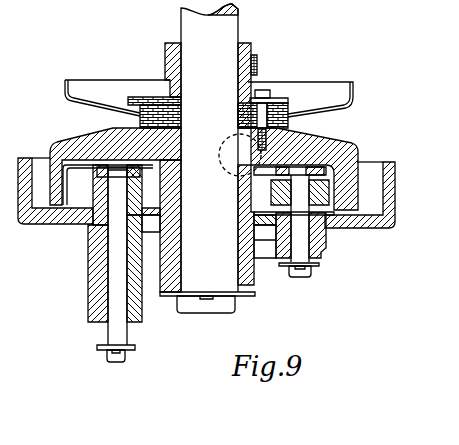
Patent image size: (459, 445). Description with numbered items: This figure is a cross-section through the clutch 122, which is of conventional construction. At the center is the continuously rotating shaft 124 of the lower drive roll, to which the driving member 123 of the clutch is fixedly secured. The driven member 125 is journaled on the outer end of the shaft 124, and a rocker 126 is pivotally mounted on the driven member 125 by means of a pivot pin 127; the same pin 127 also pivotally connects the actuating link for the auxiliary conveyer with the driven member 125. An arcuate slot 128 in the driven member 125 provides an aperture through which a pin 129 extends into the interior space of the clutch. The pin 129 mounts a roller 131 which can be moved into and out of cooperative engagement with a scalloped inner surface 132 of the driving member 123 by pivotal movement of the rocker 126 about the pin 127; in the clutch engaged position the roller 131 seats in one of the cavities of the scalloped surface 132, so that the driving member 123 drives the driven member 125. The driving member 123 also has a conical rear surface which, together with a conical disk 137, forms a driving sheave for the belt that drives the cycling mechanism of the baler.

The clutch 122 is at (41, 228).
The driving member 123 is at (70, 143).
The shaft 124 is at (238, 25).
The driven member 125 is at (90, 300).
The rocker 126 is at (93, 258).
The pivot pin 127 is at (108, 333).
The arcuate slot 128 is at (326, 230).
The pin 129 is at (298, 278).
The roller 131 is at (331, 195).
The scalloped inner surface 132 is at (69, 187).
The conical disk 137 is at (330, 109).